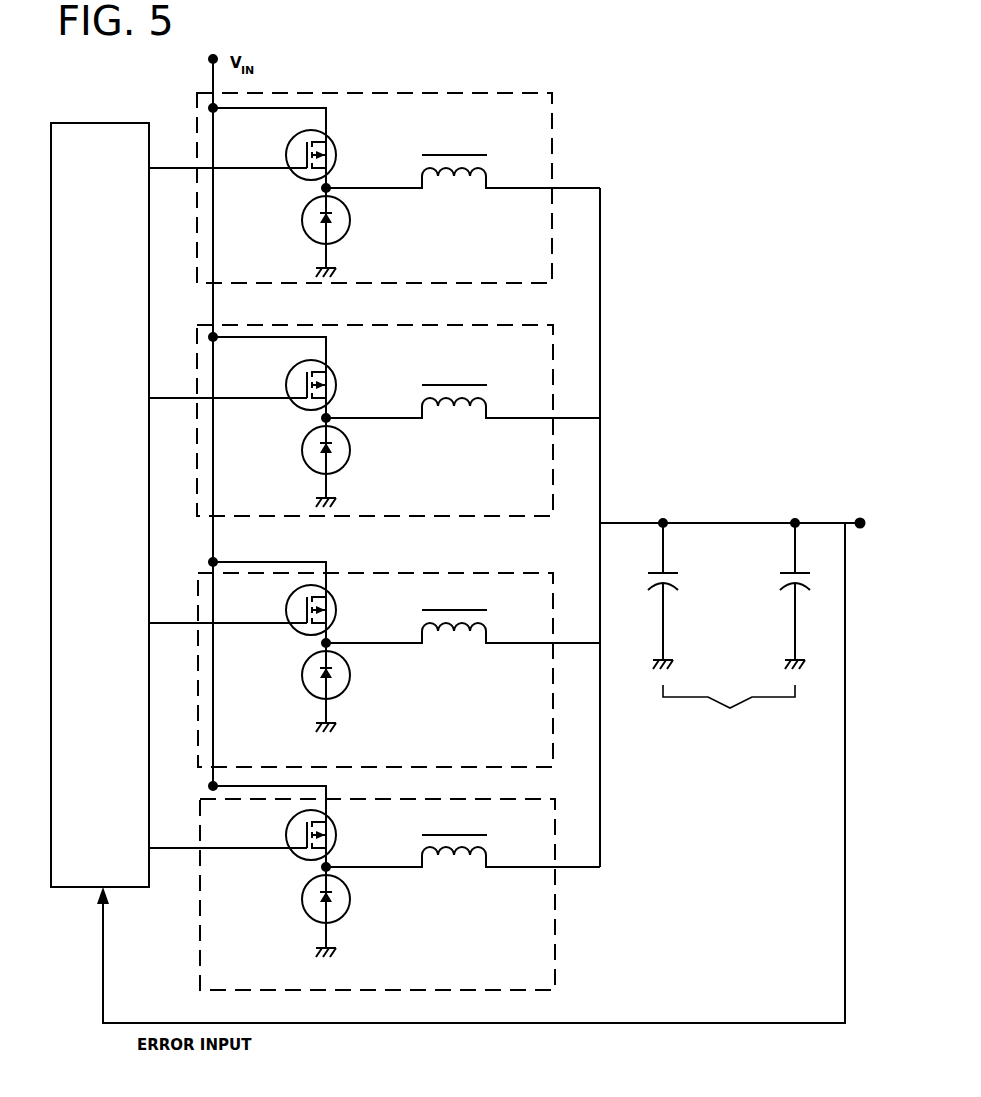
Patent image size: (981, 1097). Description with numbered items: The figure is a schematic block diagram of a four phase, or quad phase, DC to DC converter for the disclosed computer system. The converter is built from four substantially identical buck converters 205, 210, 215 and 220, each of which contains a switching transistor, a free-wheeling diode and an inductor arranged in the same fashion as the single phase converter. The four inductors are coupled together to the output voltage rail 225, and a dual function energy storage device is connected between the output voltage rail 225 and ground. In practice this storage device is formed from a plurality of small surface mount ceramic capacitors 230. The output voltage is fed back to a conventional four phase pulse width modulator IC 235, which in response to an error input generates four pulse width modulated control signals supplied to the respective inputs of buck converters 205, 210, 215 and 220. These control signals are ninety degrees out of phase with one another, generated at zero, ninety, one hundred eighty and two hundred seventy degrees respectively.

The buck converter 205 is at (486, 93).
The buck converter 210 is at (487, 325).
The buck converter 215 is at (473, 573).
The buck converter 220 is at (473, 799).
The output voltage rail 225 is at (730, 523).
The capacitor 230 is at (672, 571).
The pulse width modulator IC 235 is at (108, 123).